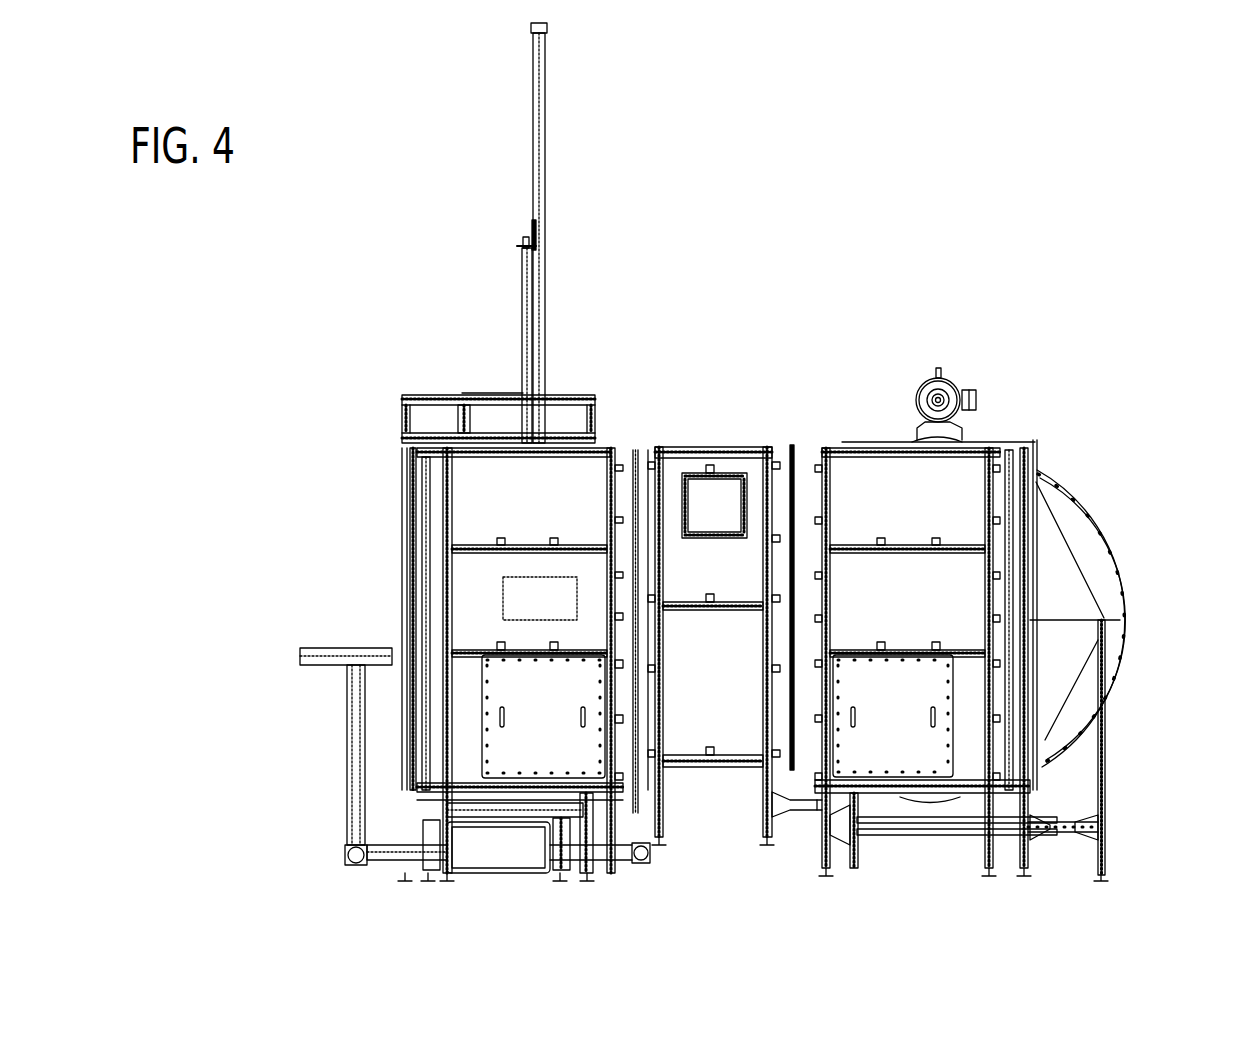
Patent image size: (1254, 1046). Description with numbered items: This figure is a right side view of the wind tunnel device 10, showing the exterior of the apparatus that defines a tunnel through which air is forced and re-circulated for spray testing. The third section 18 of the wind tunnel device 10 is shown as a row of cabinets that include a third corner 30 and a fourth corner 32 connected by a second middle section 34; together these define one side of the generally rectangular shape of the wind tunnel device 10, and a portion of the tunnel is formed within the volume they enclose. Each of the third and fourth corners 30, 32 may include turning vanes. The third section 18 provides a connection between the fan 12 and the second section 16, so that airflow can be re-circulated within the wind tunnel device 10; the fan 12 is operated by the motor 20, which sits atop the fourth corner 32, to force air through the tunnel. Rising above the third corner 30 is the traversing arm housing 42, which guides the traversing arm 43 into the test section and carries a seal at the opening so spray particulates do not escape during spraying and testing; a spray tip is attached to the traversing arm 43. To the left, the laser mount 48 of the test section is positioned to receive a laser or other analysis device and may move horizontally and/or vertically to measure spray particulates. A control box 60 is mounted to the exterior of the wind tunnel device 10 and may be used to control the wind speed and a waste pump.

The wind tunnel device 10 is at (852, 198).
The fan 12 is at (1132, 522).
The second section 16 is at (308, 600).
The third section 18 is at (672, 392).
The motor 20 is at (948, 390).
The third corner 30 is at (467, 485).
The fourth corner 32 is at (960, 485).
The second middle section 34 is at (678, 470).
The traversing arm housing 42 is at (546, 155).
The traversing arm 43 is at (521, 292).
The laser mount 48 is at (315, 665).
The control box 60 is at (538, 602).